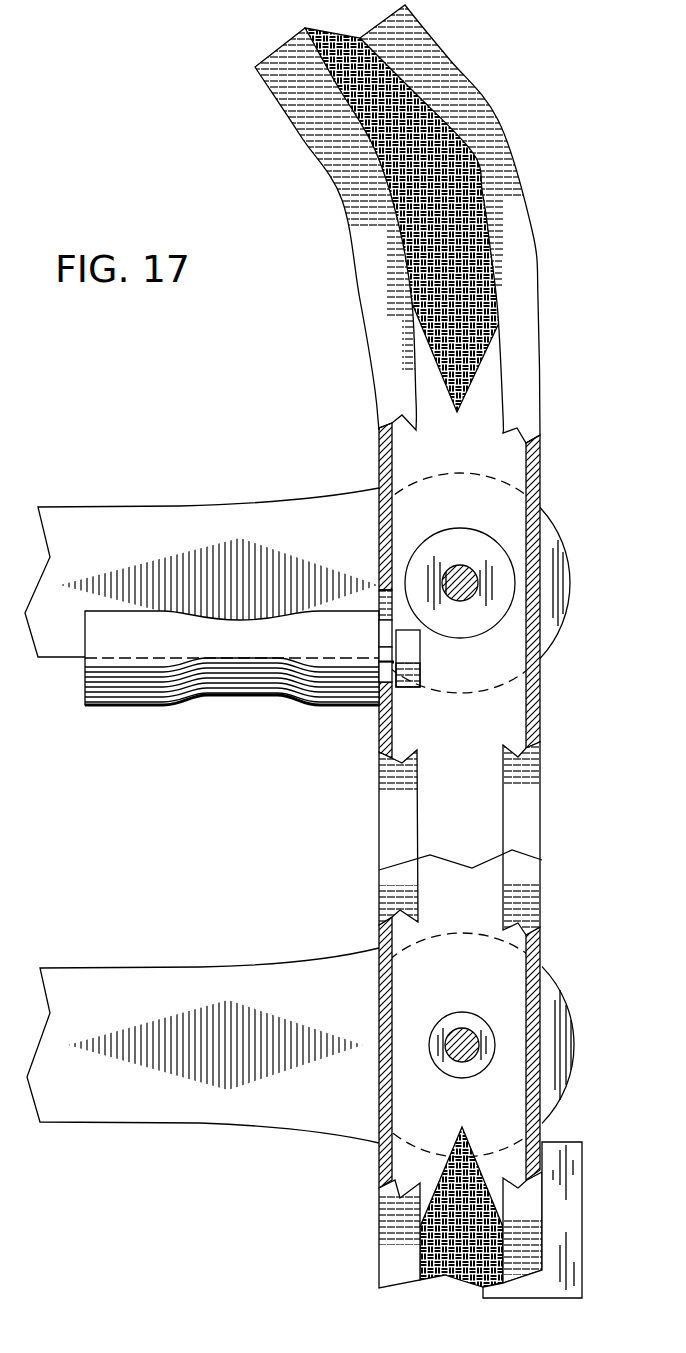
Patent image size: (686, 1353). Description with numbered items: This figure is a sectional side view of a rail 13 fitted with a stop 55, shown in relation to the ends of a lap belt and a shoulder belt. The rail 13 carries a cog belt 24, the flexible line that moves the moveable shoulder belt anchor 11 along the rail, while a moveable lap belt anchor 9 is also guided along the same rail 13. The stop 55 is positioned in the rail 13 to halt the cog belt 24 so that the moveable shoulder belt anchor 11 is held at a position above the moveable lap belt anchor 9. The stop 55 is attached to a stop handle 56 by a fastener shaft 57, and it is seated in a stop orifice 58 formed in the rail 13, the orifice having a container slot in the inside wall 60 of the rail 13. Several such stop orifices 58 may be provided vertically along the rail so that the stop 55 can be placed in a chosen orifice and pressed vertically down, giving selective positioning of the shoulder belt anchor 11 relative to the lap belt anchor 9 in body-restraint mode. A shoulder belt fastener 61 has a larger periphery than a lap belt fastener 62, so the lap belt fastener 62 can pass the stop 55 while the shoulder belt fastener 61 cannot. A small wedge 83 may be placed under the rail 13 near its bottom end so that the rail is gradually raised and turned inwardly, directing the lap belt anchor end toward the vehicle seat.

The moveable lap belt anchor 9 is at (108, 968).
The moveable shoulder belt anchor 11 is at (92, 507).
The rail 13 is at (612, 181).
The cog belt 24 is at (462, 267).
The stop 55 is at (413, 663).
The stop handle 56 is at (175, 705).
The fastener shaft 57 is at (386, 672).
The stop orifice 58 is at (379, 590).
The inside wall 60 is at (379, 853).
The shoulder belt fastener 61 is at (500, 545).
The lap belt fastener 62 is at (495, 1043).
The wedge 83 is at (570, 1220).